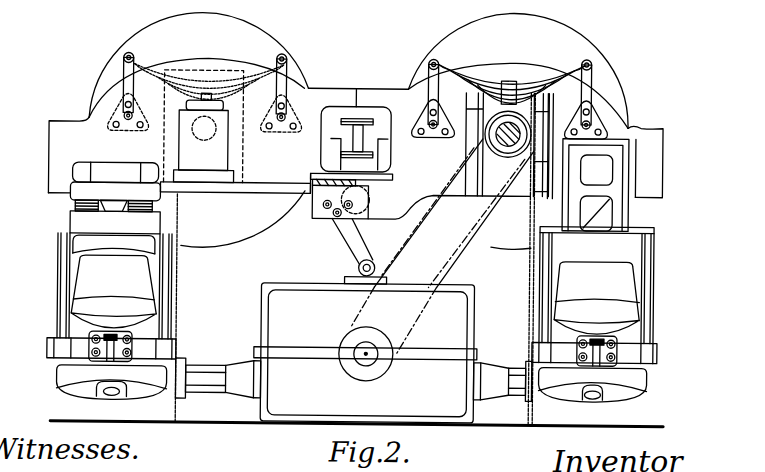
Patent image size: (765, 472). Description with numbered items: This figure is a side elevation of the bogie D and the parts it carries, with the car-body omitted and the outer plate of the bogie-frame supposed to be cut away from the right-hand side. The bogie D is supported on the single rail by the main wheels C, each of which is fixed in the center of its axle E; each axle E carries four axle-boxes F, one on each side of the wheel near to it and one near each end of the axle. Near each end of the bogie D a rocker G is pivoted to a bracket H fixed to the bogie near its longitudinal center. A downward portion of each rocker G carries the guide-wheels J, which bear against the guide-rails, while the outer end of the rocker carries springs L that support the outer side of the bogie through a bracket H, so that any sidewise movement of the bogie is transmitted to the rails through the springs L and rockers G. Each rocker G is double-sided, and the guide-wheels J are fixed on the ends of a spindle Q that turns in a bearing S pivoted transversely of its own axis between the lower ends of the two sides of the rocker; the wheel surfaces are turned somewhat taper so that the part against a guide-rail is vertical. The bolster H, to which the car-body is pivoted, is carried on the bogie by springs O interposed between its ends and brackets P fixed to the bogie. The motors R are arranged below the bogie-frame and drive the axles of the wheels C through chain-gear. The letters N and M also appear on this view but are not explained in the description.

The main wheel C is at (358, 130).
The valve housing N is at (358, 115).
The bogie D is at (224, 126).
The axle-box F is at (556, 106).
The axle E is at (361, 132).
The cap plate M is at (115, 181).
The springs L is at (77, 210).
The rocker G is at (66, 280).
The guide-wheels J is at (110, 303).
The bearing S is at (114, 359).
The spindle Q is at (112, 394).
The motor R is at (365, 353).
The bracket H is at (618, 210).
The springs O is at (356, 183).
The brackets P is at (338, 193).